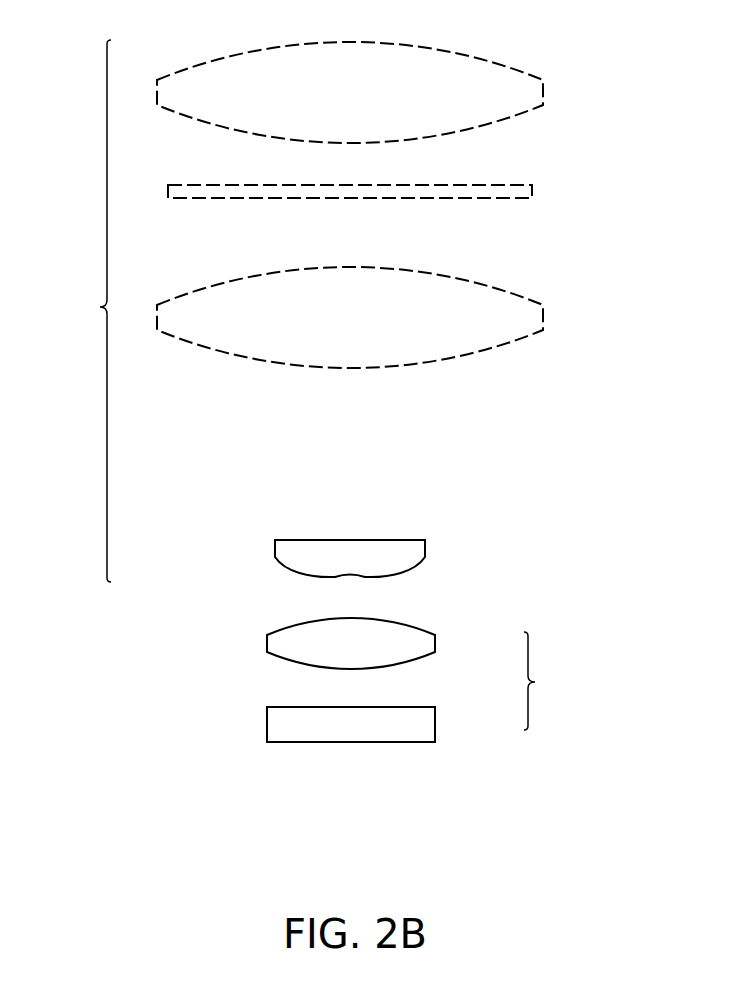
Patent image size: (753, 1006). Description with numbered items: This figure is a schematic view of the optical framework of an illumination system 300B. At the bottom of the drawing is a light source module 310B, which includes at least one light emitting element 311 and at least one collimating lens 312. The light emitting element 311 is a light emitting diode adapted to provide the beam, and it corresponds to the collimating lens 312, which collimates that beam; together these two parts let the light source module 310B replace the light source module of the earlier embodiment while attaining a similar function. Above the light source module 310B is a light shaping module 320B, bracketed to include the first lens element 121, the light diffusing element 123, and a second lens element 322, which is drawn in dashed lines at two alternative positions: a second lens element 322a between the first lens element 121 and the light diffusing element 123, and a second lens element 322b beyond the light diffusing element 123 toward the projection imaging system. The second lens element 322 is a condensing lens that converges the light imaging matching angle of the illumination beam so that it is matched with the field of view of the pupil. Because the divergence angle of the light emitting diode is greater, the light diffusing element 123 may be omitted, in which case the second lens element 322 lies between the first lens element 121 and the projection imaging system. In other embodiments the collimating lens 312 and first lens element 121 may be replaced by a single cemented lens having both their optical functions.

The second lens element 322 is at (418, 205).
The second lens element 322a is at (545, 316).
The second lens element 322b is at (546, 92).
The light diffusing element 123 is at (535, 192).
The light shaping module 320B is at (75, 311).
The first lens element 121 is at (427, 545).
The collimating lens 312 is at (437, 644).
The light emitting element 311 is at (437, 724).
The light source module 310B is at (557, 681).
The illumination system 300B is at (628, 803).